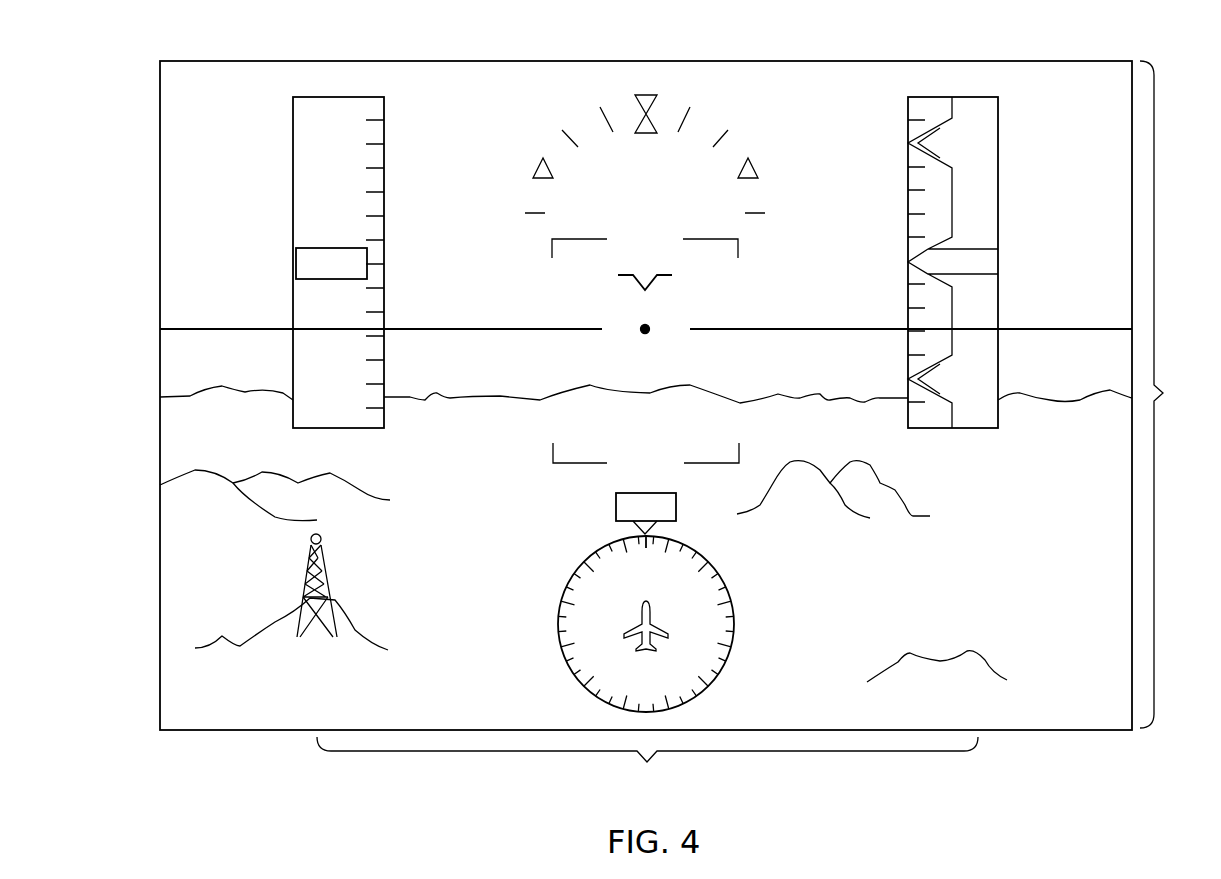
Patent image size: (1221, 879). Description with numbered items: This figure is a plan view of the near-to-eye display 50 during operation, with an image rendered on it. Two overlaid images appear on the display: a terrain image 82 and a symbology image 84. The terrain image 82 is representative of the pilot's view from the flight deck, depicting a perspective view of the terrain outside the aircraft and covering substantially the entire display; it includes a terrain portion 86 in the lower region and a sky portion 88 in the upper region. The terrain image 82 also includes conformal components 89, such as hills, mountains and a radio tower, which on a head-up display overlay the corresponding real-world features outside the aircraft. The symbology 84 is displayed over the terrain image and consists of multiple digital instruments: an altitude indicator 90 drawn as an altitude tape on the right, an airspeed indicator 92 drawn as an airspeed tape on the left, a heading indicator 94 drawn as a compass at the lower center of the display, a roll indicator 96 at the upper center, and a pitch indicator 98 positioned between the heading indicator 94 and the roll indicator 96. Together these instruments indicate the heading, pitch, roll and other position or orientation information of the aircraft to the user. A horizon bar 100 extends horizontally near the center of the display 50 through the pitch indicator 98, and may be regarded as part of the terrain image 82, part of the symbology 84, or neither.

The NTE display 50 is at (240, 61).
The terrain image 82 is at (1169, 394).
The symbology image 84 is at (647, 765).
The terrain portion 86 is at (1106, 493).
The sky portion 88 is at (1106, 137).
The conformal components 89 is at (327, 565).
The altitude indicator 90 is at (906, 158).
The airspeed indicator 92 is at (384, 162).
The heading indicator 94 is at (563, 585).
The roll indicator 96 is at (562, 143).
The pitch indicator 98 is at (690, 259).
The horizon bar 100 is at (1080, 329).